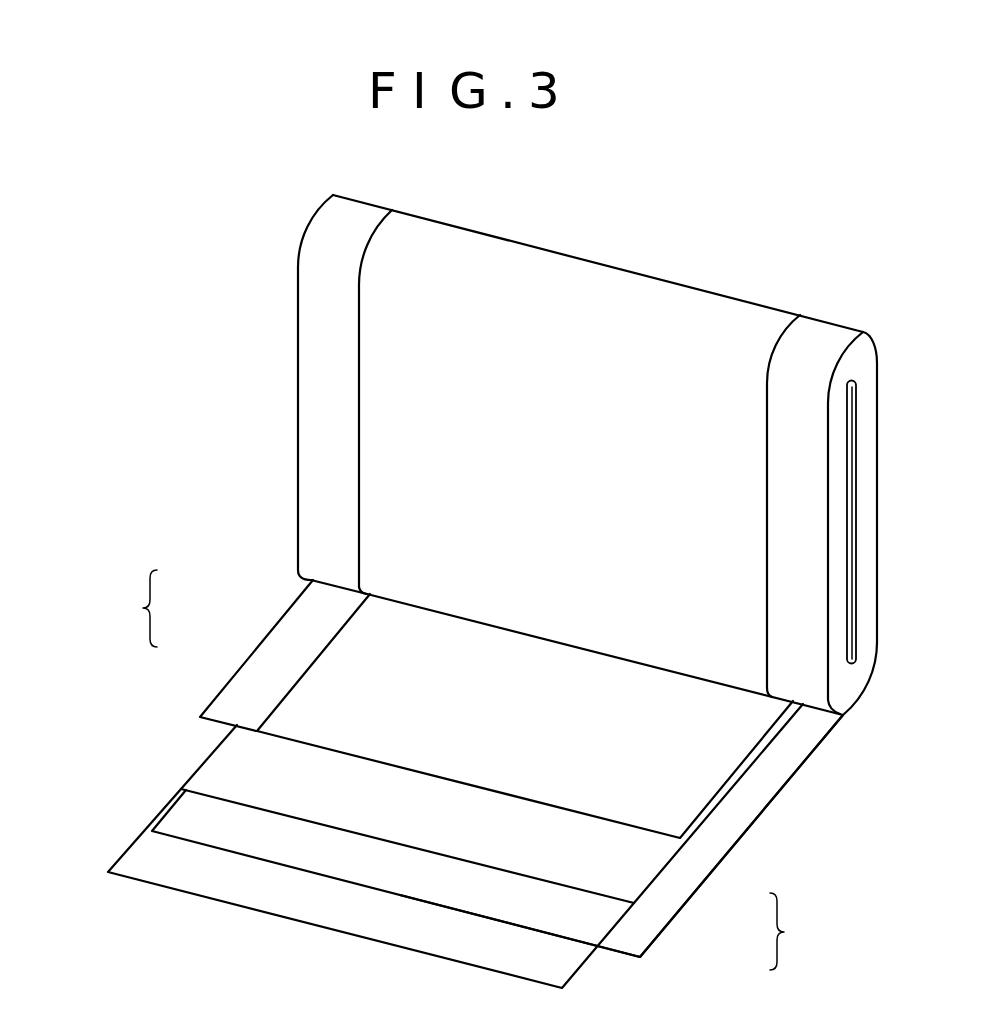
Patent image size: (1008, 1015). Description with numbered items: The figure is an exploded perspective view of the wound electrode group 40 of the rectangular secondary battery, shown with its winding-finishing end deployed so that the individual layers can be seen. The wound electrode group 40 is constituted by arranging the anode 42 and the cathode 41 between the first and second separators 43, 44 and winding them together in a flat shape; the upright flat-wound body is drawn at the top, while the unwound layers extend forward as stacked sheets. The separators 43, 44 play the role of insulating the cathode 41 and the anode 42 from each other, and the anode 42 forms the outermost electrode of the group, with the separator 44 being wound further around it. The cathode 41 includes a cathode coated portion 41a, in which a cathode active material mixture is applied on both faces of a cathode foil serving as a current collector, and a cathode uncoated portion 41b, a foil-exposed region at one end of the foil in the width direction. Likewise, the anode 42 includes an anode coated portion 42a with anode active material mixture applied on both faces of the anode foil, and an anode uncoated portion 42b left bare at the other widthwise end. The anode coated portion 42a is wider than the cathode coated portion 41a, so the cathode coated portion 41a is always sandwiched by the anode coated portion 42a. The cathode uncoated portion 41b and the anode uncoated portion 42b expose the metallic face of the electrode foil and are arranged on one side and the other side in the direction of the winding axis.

The wound electrode group 40 is at (608, 245).
The cathode 41 is at (132, 608).
The cathode coated portion 41a is at (337, 663).
The cathode uncoated portion 41b is at (307, 615).
The anode 42 is at (792, 931).
The anode coated portion 42a is at (597, 918).
The anode uncoated portion 42b is at (670, 897).
The first separator 43 is at (217, 757).
The second separator 44 is at (152, 855).